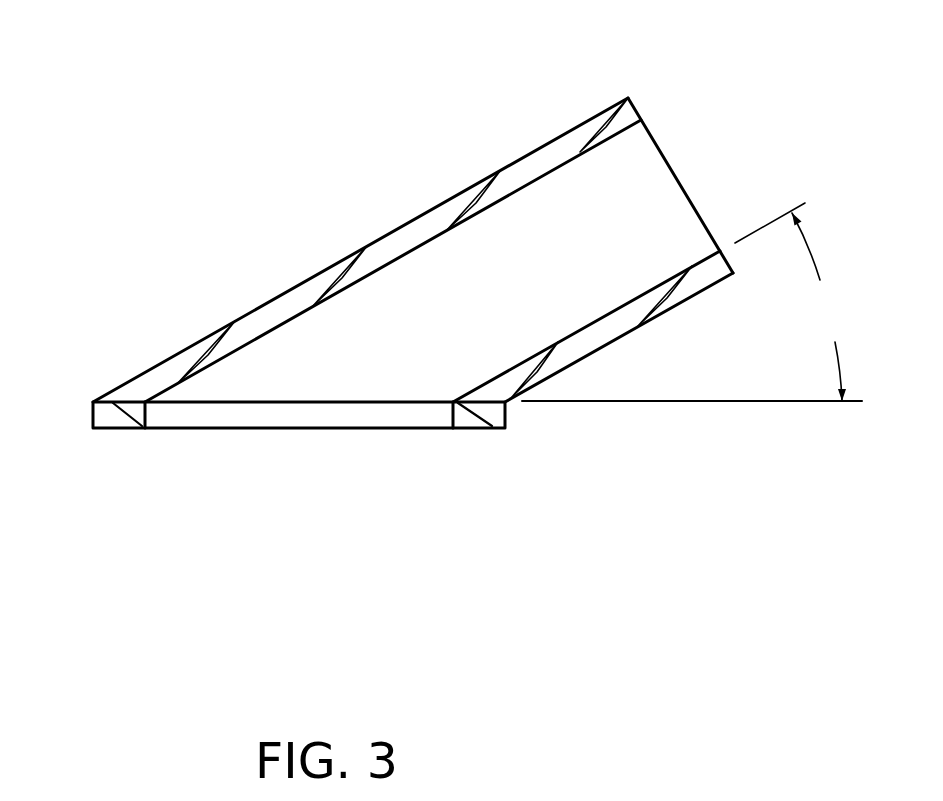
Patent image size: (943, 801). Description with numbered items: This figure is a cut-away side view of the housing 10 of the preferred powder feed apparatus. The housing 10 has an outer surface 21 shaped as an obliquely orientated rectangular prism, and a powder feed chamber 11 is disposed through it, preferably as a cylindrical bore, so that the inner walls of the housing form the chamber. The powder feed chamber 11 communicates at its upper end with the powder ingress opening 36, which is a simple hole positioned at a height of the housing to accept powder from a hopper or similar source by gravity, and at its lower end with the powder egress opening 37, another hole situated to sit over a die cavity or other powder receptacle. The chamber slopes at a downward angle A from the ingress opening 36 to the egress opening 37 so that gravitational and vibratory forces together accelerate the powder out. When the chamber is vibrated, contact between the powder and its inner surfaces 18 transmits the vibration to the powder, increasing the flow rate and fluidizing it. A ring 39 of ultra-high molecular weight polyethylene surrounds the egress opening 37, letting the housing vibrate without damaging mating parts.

The housing 10 is at (663, 97).
The powder feed chamber 11 is at (665, 242).
The inner surfaces 18 is at (297, 312).
The outer surface 21 is at (423, 212).
The powder ingress opening 36 is at (666, 158).
The powder egress opening 37 is at (305, 407).
The ring 39 is at (110, 422).
The downward angle A is at (692, 302).